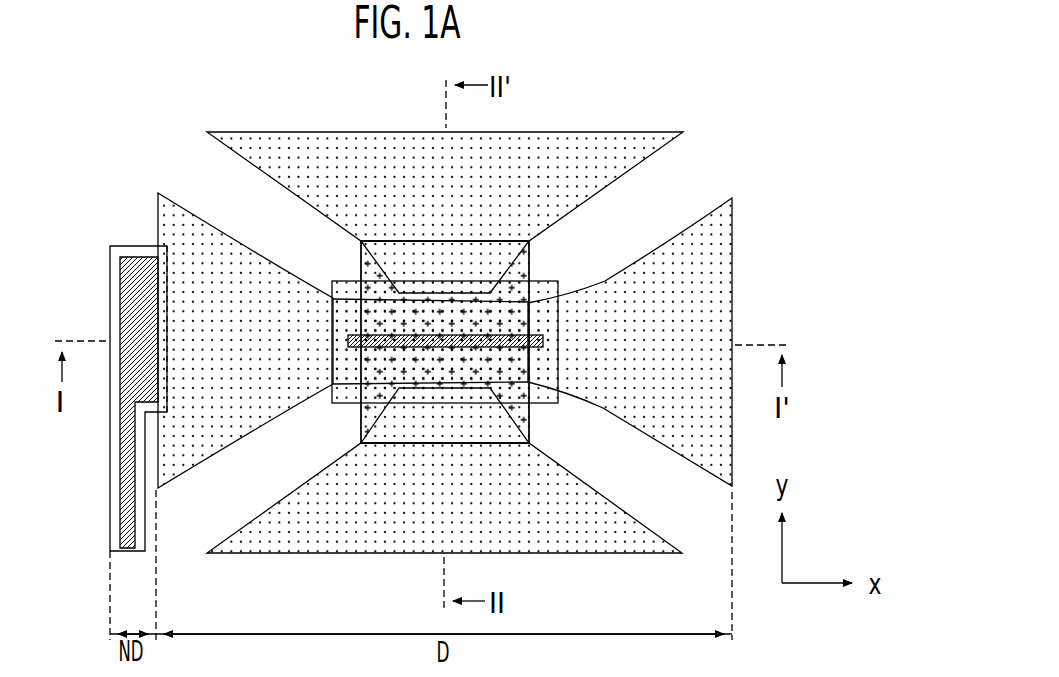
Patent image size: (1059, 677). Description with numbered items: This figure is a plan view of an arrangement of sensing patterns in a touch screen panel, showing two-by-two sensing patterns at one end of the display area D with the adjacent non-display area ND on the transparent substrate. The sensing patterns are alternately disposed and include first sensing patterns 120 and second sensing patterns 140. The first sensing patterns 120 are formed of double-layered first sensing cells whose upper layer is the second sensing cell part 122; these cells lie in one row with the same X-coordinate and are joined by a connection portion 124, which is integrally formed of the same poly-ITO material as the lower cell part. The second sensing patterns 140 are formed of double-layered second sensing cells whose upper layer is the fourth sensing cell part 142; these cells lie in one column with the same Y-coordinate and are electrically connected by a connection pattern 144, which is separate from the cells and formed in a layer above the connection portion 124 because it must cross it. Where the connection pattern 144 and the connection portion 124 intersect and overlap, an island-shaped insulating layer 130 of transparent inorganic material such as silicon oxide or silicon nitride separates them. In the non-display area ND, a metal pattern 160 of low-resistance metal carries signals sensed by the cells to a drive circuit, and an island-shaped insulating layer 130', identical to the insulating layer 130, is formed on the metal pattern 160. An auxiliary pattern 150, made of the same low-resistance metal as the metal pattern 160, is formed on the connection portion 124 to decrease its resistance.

The first sensing pattern 120 is at (474, 338).
The second sensing cell part 122 is at (158, 204).
The connection portion 124 is at (600, 283).
The insulating layer 130 is at (329, 243).
The insulating layer 130' is at (92, 398).
The second sensing pattern 140 is at (514, 228).
The fourth sensing cell part 142 is at (553, 146).
The connection pattern 144 is at (524, 264).
The auxiliary pattern 150 is at (363, 339).
The metal pattern 160 is at (122, 476).